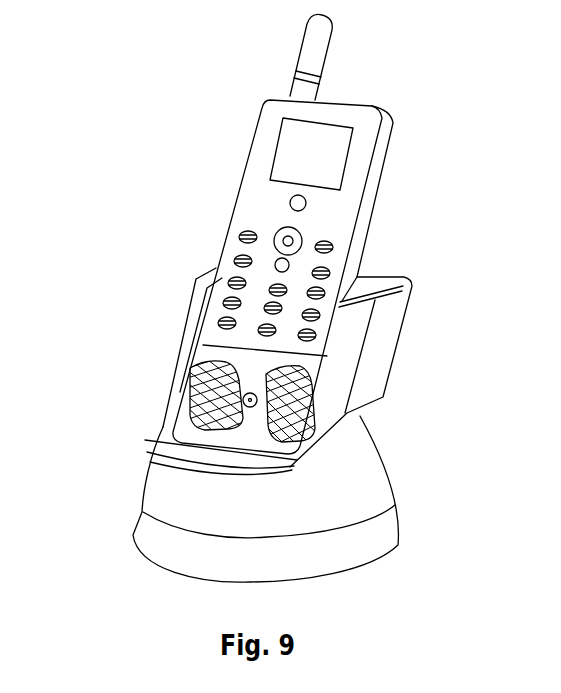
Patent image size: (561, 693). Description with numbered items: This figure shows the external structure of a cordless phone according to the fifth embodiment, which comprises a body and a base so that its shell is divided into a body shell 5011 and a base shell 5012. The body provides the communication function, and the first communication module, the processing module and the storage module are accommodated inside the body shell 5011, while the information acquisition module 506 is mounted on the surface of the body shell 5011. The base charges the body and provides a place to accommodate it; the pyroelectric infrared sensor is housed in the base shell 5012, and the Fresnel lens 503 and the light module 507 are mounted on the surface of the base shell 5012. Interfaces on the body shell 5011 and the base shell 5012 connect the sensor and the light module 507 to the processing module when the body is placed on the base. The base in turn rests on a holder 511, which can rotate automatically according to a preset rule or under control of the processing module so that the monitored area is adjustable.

The body shell 5011 is at (267, 139).
The information acquisition module 506 is at (290, 207).
The base shell 5012 is at (212, 272).
The Fresnel lens 503 is at (180, 362).
The light module 507 is at (268, 428).
The holder 511 is at (132, 538).